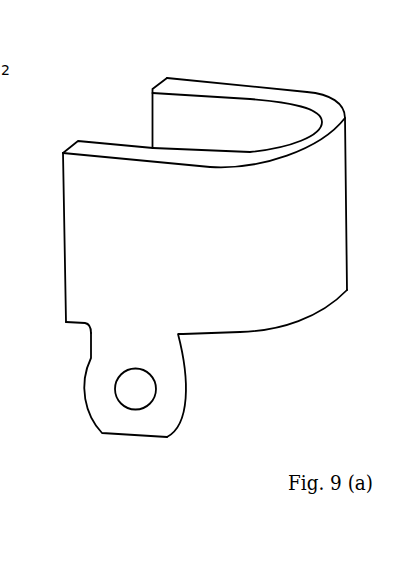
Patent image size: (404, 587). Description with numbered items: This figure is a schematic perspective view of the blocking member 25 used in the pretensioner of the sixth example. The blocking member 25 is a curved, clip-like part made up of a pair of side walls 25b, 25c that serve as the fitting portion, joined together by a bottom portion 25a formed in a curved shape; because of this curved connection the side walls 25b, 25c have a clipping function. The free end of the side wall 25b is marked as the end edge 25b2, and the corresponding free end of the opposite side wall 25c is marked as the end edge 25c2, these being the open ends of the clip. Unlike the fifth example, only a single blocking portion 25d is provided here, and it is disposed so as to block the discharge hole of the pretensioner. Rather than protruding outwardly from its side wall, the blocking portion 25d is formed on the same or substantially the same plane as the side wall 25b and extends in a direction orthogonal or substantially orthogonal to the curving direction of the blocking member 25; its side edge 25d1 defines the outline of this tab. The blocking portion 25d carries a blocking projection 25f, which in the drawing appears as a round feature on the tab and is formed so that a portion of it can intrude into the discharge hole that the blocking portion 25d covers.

The blocking member 25 is at (330, 80).
The bottom portion 25a is at (332, 292).
The side wall 25b is at (80, 211).
The end edge of first arm portion 25b2 is at (102, 142).
The side wall 25c is at (247, 82).
The end edge of second arm portion 25c2 is at (195, 102).
The blocking portion 25d is at (93, 395).
The side edge of projecting tab 25d1 is at (175, 382).
The blocking projection 25f is at (128, 397).